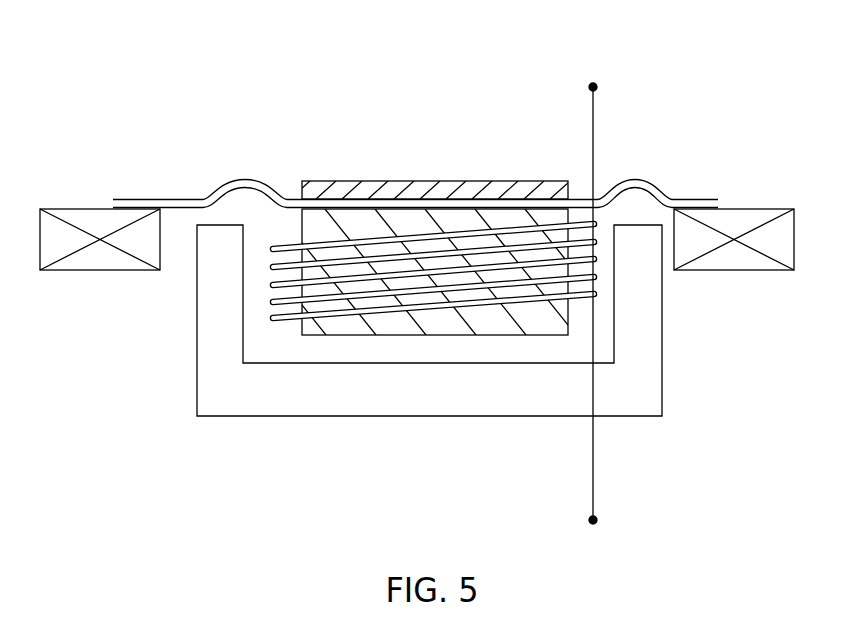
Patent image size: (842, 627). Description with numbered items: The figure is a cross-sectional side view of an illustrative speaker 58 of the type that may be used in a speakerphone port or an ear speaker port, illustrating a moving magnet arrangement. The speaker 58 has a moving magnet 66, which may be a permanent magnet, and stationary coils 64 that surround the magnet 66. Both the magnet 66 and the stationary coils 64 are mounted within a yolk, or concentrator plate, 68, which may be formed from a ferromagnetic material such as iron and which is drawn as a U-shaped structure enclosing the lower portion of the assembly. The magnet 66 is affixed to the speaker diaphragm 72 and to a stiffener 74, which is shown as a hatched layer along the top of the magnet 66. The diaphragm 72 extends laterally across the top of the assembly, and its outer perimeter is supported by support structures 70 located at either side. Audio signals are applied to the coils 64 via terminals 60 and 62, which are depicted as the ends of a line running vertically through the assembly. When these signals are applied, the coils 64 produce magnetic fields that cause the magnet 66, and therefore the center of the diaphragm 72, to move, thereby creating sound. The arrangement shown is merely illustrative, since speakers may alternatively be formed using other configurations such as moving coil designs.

The speaker 58 is at (668, 85).
The terminal 60 is at (589, 87).
The terminal 62 is at (597, 522).
The stationary coils 64 is at (368, 330).
The magnet 66 is at (520, 313).
The yolk (concentrator plate) 68 is at (647, 366).
The support structures 70 is at (100, 271).
The speaker diaphragm 72 is at (637, 177).
The stiffener 74 is at (413, 180).